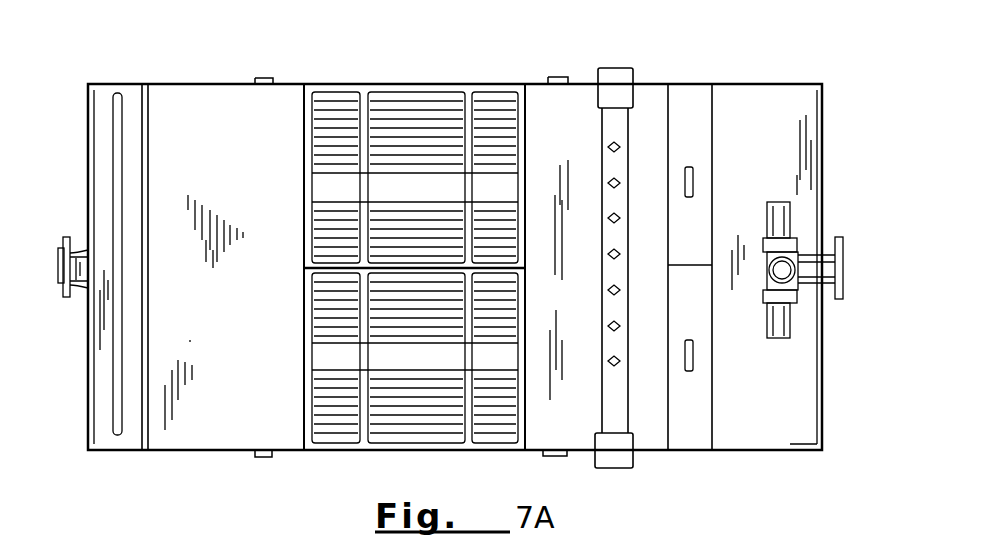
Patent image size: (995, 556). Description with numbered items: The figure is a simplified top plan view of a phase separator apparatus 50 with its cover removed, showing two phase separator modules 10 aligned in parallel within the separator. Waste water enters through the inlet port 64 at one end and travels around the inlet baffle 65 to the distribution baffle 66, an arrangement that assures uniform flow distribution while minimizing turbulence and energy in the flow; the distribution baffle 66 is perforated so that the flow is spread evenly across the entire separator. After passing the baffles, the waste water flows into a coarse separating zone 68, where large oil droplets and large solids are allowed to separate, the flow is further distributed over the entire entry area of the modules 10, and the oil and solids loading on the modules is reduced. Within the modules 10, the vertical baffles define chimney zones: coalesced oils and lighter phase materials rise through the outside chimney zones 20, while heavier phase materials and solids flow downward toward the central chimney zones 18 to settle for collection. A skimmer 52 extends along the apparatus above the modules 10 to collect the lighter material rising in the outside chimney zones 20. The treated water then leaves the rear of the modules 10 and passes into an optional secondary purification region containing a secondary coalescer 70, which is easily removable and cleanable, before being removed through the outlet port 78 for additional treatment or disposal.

The phase separator apparatus 50 is at (180, 58).
The phase separator module 10 is at (428, 118).
The outside chimney zones 20 is at (402, 92).
The central chimney zone 18 is at (388, 188).
The inlet baffle 65 is at (113, 143).
The distribution baffle 66 is at (148, 167).
The inlet port 64 is at (85, 252).
The coarse separating zone 68 is at (222, 314).
The secondary coalescer 70 is at (714, 161).
The outlet port 78 is at (843, 265).
The skimmer 52 is at (650, 420).